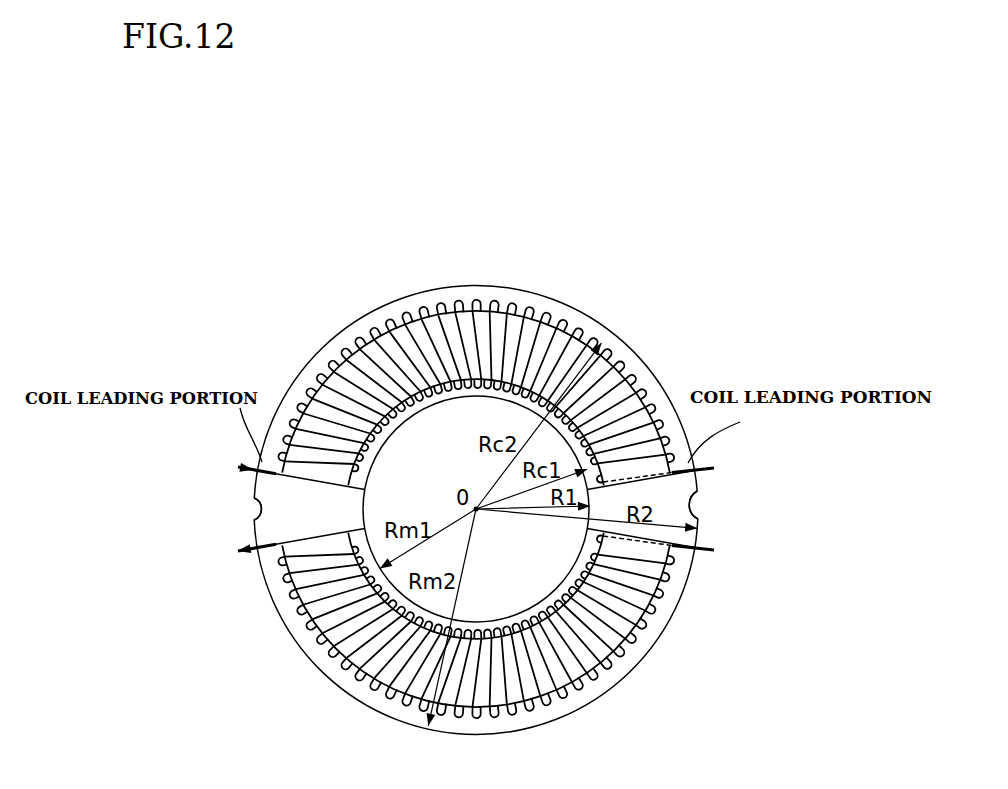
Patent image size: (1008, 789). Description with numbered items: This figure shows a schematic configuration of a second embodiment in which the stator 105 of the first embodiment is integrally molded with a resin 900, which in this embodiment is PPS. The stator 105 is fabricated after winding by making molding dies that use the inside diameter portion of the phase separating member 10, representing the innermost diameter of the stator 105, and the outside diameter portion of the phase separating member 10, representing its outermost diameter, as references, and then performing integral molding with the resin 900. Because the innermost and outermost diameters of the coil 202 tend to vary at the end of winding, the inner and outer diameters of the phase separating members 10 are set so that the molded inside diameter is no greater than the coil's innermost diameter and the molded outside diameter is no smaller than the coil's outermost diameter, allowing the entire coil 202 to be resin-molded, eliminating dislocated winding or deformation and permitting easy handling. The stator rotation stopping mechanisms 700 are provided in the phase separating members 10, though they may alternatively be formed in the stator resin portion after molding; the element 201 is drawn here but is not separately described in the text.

The stator 105 is at (637, 297).
The phase separating member 10 is at (277, 495).
The stator rotation stopping mechanism 700 is at (263, 511).
The resin 900 is at (513, 392).
The coil conductor portion 201 is at (545, 678).
The coil 202 is at (623, 653).